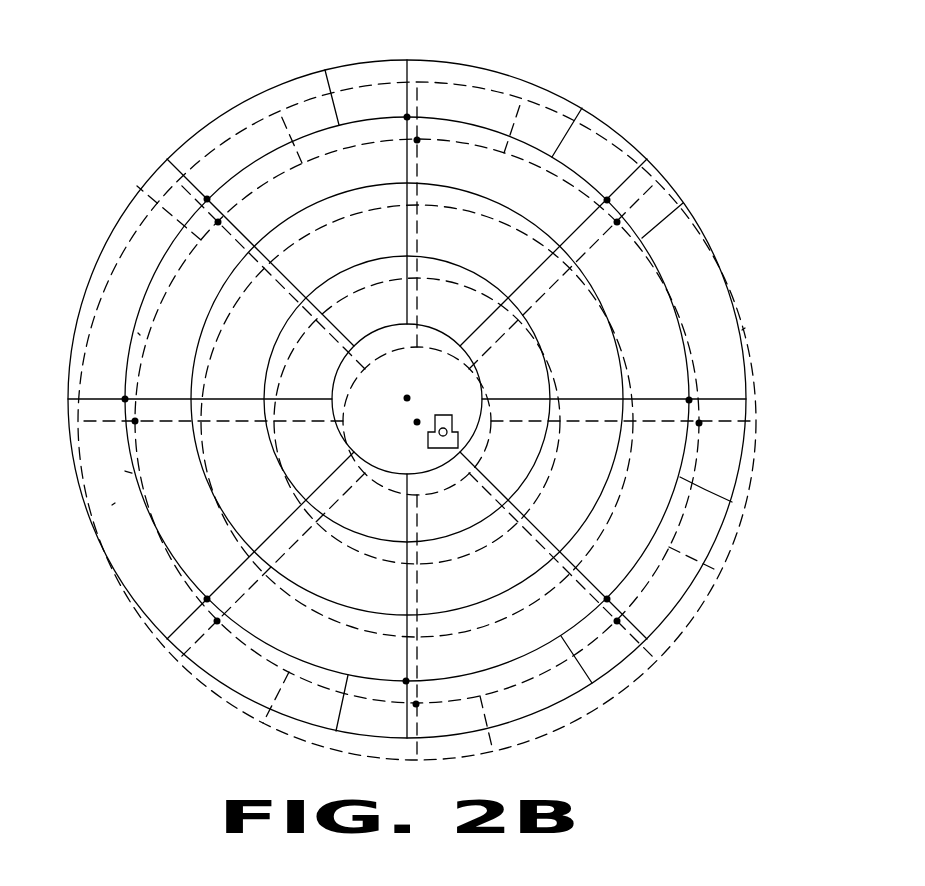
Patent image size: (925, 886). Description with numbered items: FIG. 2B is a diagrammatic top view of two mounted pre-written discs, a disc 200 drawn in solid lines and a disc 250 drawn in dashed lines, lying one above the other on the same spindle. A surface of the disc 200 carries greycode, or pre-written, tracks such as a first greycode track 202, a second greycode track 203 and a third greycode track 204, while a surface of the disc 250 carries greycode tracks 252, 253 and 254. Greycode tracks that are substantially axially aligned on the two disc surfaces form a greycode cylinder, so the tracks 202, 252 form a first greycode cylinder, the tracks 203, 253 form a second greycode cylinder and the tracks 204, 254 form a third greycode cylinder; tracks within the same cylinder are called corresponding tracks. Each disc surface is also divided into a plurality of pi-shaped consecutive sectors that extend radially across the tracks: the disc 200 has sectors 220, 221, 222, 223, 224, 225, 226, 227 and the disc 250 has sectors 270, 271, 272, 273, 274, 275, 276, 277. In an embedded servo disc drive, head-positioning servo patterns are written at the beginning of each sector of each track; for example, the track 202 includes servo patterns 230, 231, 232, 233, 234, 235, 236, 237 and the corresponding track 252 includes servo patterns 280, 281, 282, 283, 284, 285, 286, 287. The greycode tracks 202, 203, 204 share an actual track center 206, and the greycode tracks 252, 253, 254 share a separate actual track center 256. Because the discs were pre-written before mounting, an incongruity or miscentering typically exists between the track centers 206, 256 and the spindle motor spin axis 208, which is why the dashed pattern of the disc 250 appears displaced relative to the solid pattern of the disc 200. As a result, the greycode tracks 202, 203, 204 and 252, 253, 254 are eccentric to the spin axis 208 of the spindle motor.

The disc 200 is at (486, 60).
The greycode track 202 is at (156, 241).
The greycode track 203 is at (200, 306).
The greycode track 204 is at (280, 317).
The actual track center 206 is at (407, 396).
The spindle motor spin axis 208 is at (448, 414).
The sector 220 is at (323, 68).
The sector 221 is at (583, 107).
The sector 222 is at (683, 203).
The sector 223 is at (732, 502).
The sector 224 is at (592, 683).
The sector 225 is at (336, 731).
The sector 226 is at (130, 472).
The sector 227 is at (140, 334).
The servo pattern 230 is at (207, 197).
The servo pattern 231 is at (407, 115).
The servo pattern 232 is at (609, 199).
The servo pattern 233 is at (690, 402).
The servo pattern 234 is at (608, 600).
The servo pattern 235 is at (405, 680).
The servo pattern 236 is at (206, 598).
The servo pattern 237 is at (124, 398).
The disc 250 is at (568, 731).
The greycode track 252 is at (193, 372).
The greycode track 253 is at (137, 342).
The greycode track 254 is at (275, 367).
The actual track center 256 is at (416, 424).
The sector 270 is at (279, 110).
The sector 271 is at (523, 98).
The sector 272 is at (742, 330).
The sector 273 is at (722, 572).
The sector 274 is at (495, 750).
The sector 275 is at (263, 723).
The sector 276 is at (112, 505).
The sector 277 is at (138, 181).
The servo pattern 280 is at (218, 220).
The servo pattern 281 is at (418, 142).
The servo pattern 282 is at (618, 225).
The servo pattern 283 is at (701, 424).
The servo pattern 284 is at (653, 681).
The servo pattern 285 is at (401, 745).
The servo pattern 286 is at (176, 660).
The servo pattern 287 is at (133, 421).